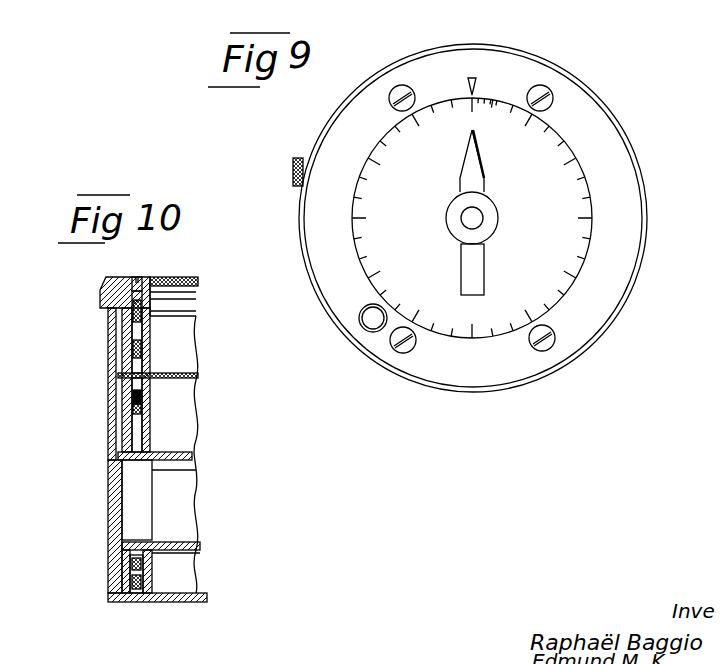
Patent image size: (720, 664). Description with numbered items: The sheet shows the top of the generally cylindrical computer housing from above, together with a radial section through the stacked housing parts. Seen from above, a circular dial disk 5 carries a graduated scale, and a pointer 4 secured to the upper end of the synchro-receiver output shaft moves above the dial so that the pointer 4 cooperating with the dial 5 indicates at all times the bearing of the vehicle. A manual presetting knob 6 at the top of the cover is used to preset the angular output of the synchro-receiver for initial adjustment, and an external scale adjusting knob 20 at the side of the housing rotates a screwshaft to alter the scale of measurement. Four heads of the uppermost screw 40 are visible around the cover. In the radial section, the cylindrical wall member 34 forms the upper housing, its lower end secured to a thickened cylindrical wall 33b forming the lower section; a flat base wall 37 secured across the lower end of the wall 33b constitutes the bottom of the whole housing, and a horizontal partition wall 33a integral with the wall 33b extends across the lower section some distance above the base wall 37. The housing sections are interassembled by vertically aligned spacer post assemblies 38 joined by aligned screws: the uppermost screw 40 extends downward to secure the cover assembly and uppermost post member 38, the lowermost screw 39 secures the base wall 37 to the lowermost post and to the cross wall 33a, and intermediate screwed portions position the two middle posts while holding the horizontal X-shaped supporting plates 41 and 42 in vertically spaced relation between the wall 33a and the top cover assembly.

In FIG. 9, the pointer 4 is at (478, 180).
In FIG. 9, the dial disk 5 is at (567, 285).
In FIG. 9, the manual presetting knob 6 is at (372, 325).
In FIG. 9, the scale adjusting knob 20 is at (298, 160).
In FIG. 9, the uppermost screw 40 is at (535, 350).
In FIG. 10, the uppermost screw 40 is at (137, 283).
In FIG. 10, the cylindrical wall member 34 is at (112, 400).
In FIG. 10, the spacer post assembly 38 is at (158, 423).
In FIG. 10, the horizontal X-shaped supporting plate 42 is at (176, 375).
In FIG. 10, the horizontal X-shaped supporting plate 41 is at (178, 456).
In FIG. 10, the horizontal partition wall 33a is at (177, 543).
In FIG. 10, the thickened cylindrical wall 33b is at (113, 493).
In FIG. 10, the lowermost screw 39 is at (136, 600).
In FIG. 10, the flat base wall 37 is at (181, 603).